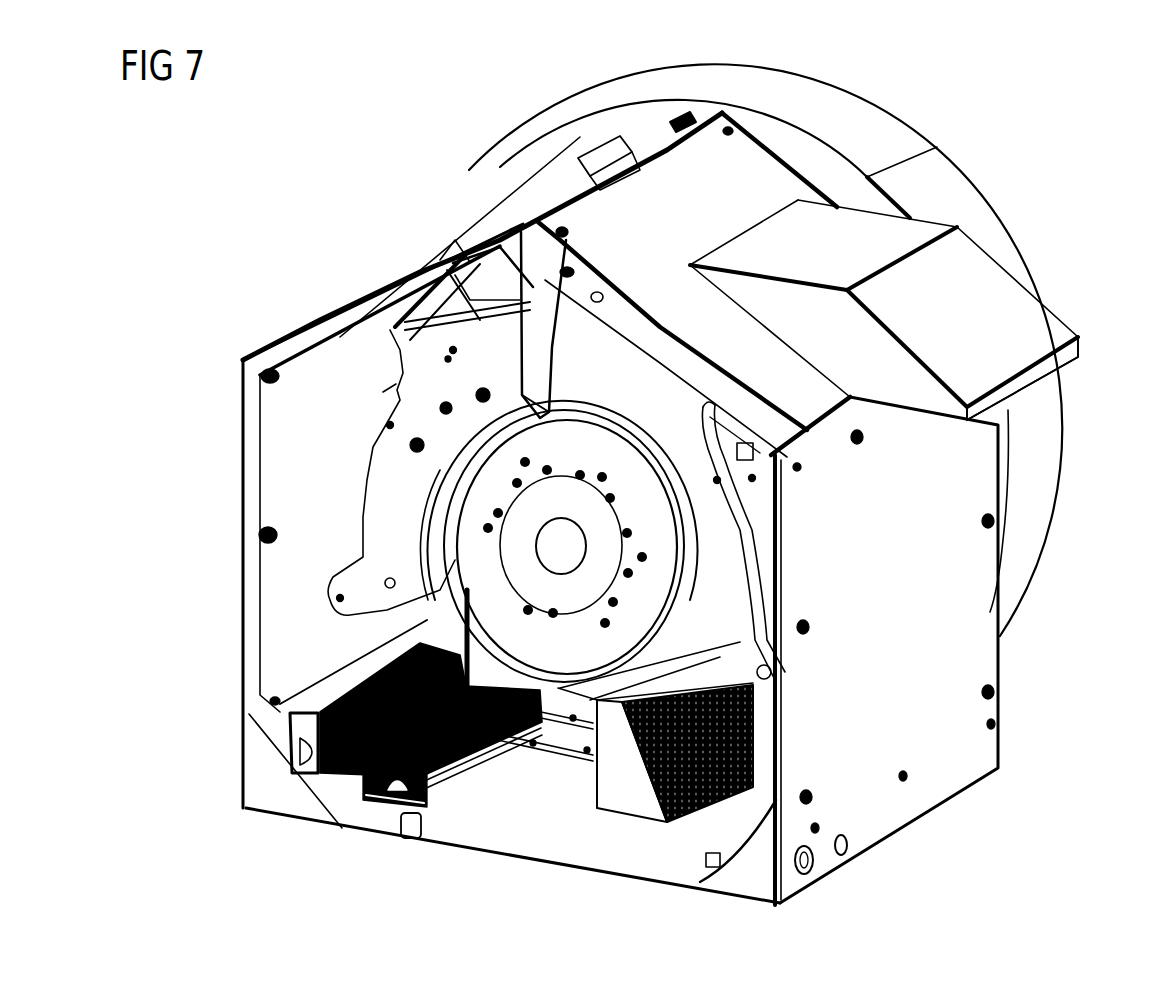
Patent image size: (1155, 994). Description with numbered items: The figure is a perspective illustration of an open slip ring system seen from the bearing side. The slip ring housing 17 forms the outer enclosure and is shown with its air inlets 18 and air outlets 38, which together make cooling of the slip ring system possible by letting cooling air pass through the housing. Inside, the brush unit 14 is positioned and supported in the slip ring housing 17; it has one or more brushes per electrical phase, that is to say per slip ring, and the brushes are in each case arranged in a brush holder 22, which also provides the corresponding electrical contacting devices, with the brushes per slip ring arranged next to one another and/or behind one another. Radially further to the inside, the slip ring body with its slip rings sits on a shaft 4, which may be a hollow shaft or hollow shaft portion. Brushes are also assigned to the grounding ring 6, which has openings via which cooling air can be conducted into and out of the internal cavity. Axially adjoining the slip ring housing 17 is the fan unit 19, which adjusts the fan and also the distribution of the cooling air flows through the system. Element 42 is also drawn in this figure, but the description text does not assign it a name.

The shaft 4 is at (518, 535).
The grounding ring 6 is at (540, 636).
The brush unit 14 is at (432, 273).
The slip ring housing 17 is at (440, 262).
The air inlets 18 is at (1037, 390).
The fan unit 19 is at (1010, 245).
The brush holder 22 is at (475, 270).
The air outlets 38 is at (775, 740).
The guide rail 42 is at (356, 770).